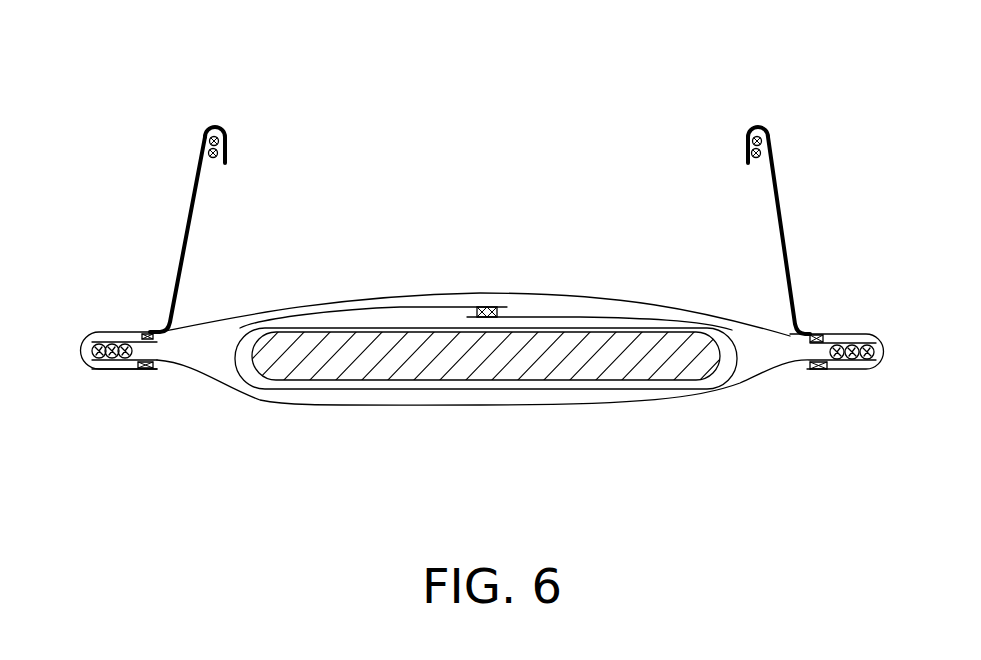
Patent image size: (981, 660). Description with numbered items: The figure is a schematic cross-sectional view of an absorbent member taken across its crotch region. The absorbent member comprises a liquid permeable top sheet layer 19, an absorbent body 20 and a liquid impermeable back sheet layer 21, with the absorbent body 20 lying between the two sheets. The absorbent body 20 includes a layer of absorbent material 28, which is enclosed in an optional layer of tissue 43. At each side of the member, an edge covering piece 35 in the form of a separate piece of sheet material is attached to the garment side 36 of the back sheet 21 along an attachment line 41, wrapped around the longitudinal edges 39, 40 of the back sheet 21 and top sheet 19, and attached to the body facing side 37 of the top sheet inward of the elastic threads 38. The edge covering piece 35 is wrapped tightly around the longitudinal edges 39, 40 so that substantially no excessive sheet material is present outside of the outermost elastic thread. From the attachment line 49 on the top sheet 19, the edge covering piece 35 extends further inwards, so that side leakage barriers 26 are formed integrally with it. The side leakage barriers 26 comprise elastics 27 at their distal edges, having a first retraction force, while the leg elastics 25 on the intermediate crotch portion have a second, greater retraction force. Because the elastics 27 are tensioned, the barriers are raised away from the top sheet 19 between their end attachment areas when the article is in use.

The liquid permeable top sheet layer 19 is at (437, 303).
The absorbent body 20 is at (650, 350).
The liquid impermeable back sheet layer 21 is at (465, 406).
The leg elastics 25 is at (848, 334).
The side leakage barriers 26 is at (187, 220).
The elastics 27 is at (227, 145).
The layer of absorbent material 28 is at (560, 350).
The edge covering piece 35 is at (90, 371).
The garment side 36 is at (362, 406).
The body facing side 37 is at (328, 302).
The elastic threads 38 is at (127, 371).
The longitudinal edge 39 is at (855, 370).
The longitudinal edge 40 is at (876, 334).
The attachment line 41 is at (160, 370).
The layer of tissue 43 is at (617, 315).
The attachment line 49 is at (160, 332).